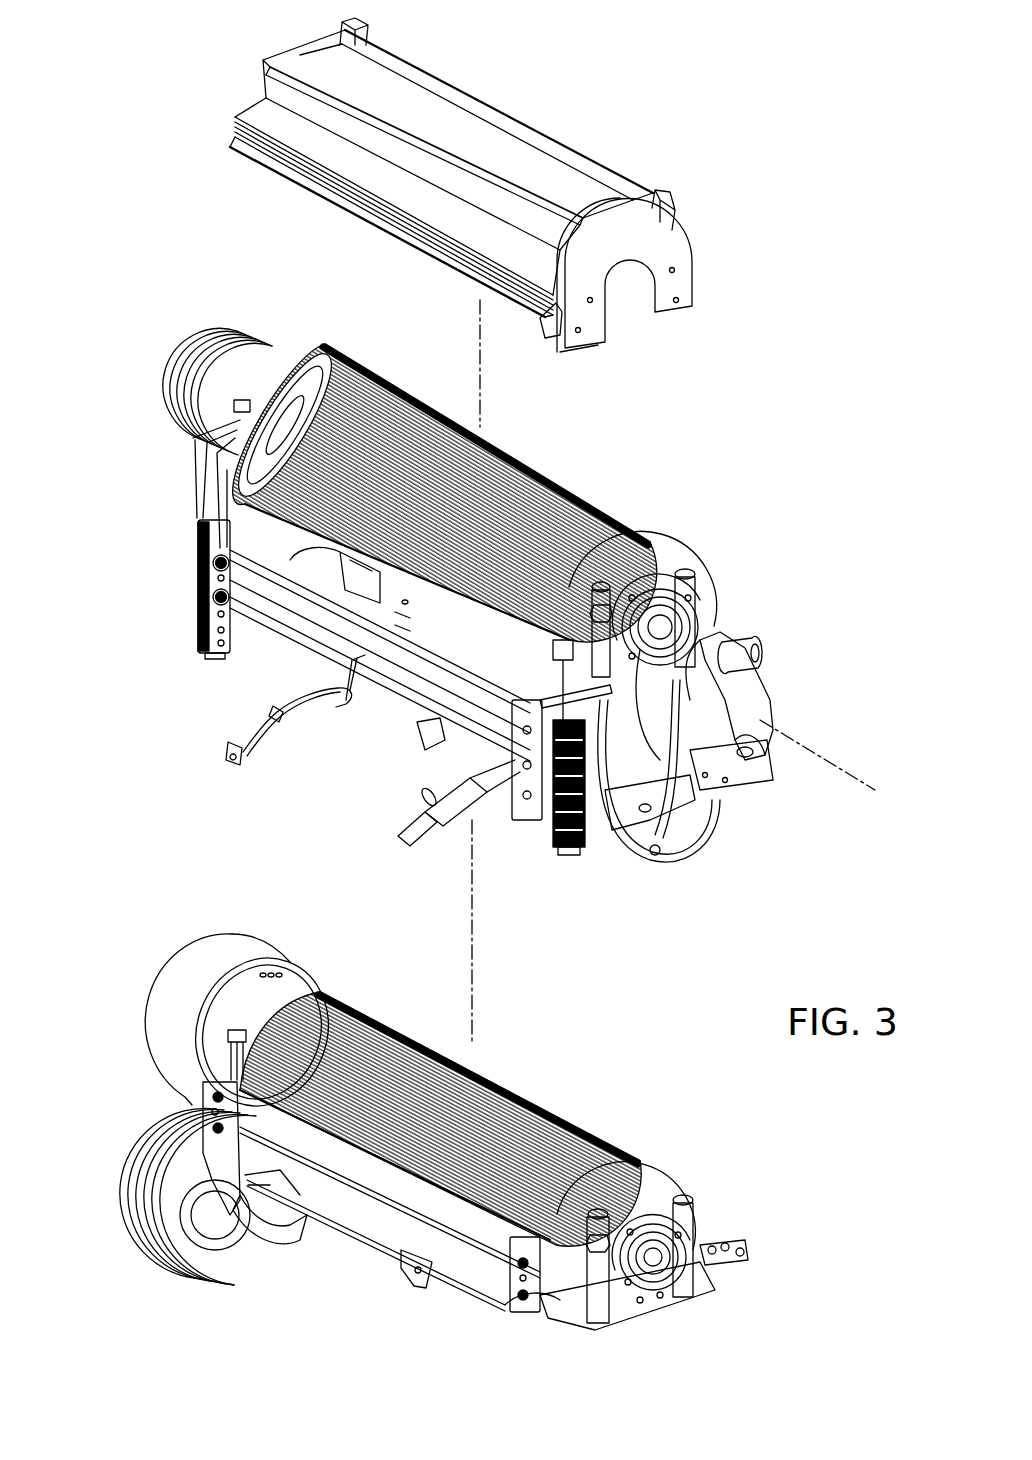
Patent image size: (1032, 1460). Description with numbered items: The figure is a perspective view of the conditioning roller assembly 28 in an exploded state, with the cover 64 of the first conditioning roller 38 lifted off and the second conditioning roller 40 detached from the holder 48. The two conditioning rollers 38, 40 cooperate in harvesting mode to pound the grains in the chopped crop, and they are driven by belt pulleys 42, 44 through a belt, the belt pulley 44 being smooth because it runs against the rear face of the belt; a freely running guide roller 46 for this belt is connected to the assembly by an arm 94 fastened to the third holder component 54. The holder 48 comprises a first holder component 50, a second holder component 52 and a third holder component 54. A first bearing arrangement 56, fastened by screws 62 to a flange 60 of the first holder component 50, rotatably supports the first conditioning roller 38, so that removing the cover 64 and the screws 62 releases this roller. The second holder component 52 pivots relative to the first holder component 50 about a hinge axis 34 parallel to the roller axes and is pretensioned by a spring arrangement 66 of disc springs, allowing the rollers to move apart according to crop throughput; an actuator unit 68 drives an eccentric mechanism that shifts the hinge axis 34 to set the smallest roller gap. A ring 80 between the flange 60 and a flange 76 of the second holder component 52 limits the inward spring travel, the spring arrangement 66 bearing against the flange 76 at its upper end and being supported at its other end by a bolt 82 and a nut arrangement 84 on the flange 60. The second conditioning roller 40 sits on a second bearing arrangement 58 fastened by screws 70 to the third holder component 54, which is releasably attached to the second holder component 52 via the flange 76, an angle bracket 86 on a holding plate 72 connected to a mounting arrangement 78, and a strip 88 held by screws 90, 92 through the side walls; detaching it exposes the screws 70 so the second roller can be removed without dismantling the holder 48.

The conditioning roller assembly 28 is at (712, 76).
The hinge axis 34 is at (870, 768).
The first conditioning roller 38 is at (560, 470).
The second conditioning roller 40 is at (567, 1110).
The belt pulley 42 is at (205, 348).
The belt pulley 44 is at (193, 980).
The guide roller 46 is at (122, 1175).
The holder 48 is at (790, 613).
The first holder component 50 is at (700, 635).
The second holder component 52 is at (662, 842).
The third holder component 54 is at (697, 1297).
The first bearing arrangement 56 is at (673, 572).
The second bearing arrangement 58 is at (655, 1255).
The flange 60 is at (523, 703).
The screws 62 is at (605, 600).
The cover 64 is at (500, 150).
The spring arrangement 66 is at (217, 597).
The actuator unit 68 is at (442, 832).
The screws 70 is at (602, 1232).
The holding plate 72 is at (735, 768).
The flange 76 is at (443, 757).
The mounting arrangement 78 is at (755, 688).
The ring 80 is at (510, 750).
The bolt 82 is at (500, 643).
The nut arrangement 84 is at (523, 687).
The angle bracket 86 is at (735, 1257).
The strip 88 is at (210, 610).
The screws 90 is at (200, 1093).
The screws 92 is at (213, 563).
The arm 94 is at (273, 1228).